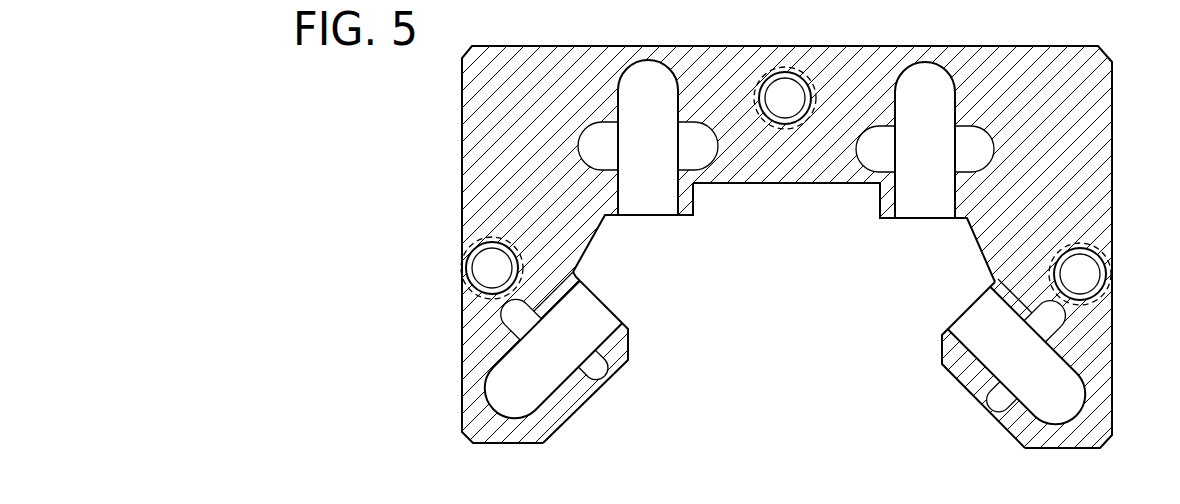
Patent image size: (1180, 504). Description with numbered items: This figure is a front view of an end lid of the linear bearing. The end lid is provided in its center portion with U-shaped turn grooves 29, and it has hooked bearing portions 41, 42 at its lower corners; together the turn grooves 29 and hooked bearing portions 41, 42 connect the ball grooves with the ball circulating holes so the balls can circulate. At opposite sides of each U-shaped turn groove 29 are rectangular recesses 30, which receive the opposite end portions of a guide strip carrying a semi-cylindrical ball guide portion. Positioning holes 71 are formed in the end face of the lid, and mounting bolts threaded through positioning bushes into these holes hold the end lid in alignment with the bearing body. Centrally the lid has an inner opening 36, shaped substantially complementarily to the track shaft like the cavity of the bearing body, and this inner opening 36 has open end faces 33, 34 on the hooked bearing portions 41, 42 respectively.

The U-shaped turn groove 29 is at (650, 62).
The rectangular recess 30 is at (608, 125).
The positioning hole 71 is at (785, 78).
The inner opening 36 is at (788, 185).
The open end face 34 is at (630, 345).
The open end face 33 is at (942, 348).
The hooked bearing portion 42 is at (466, 424).
The hooked bearing portion 41 is at (1112, 433).